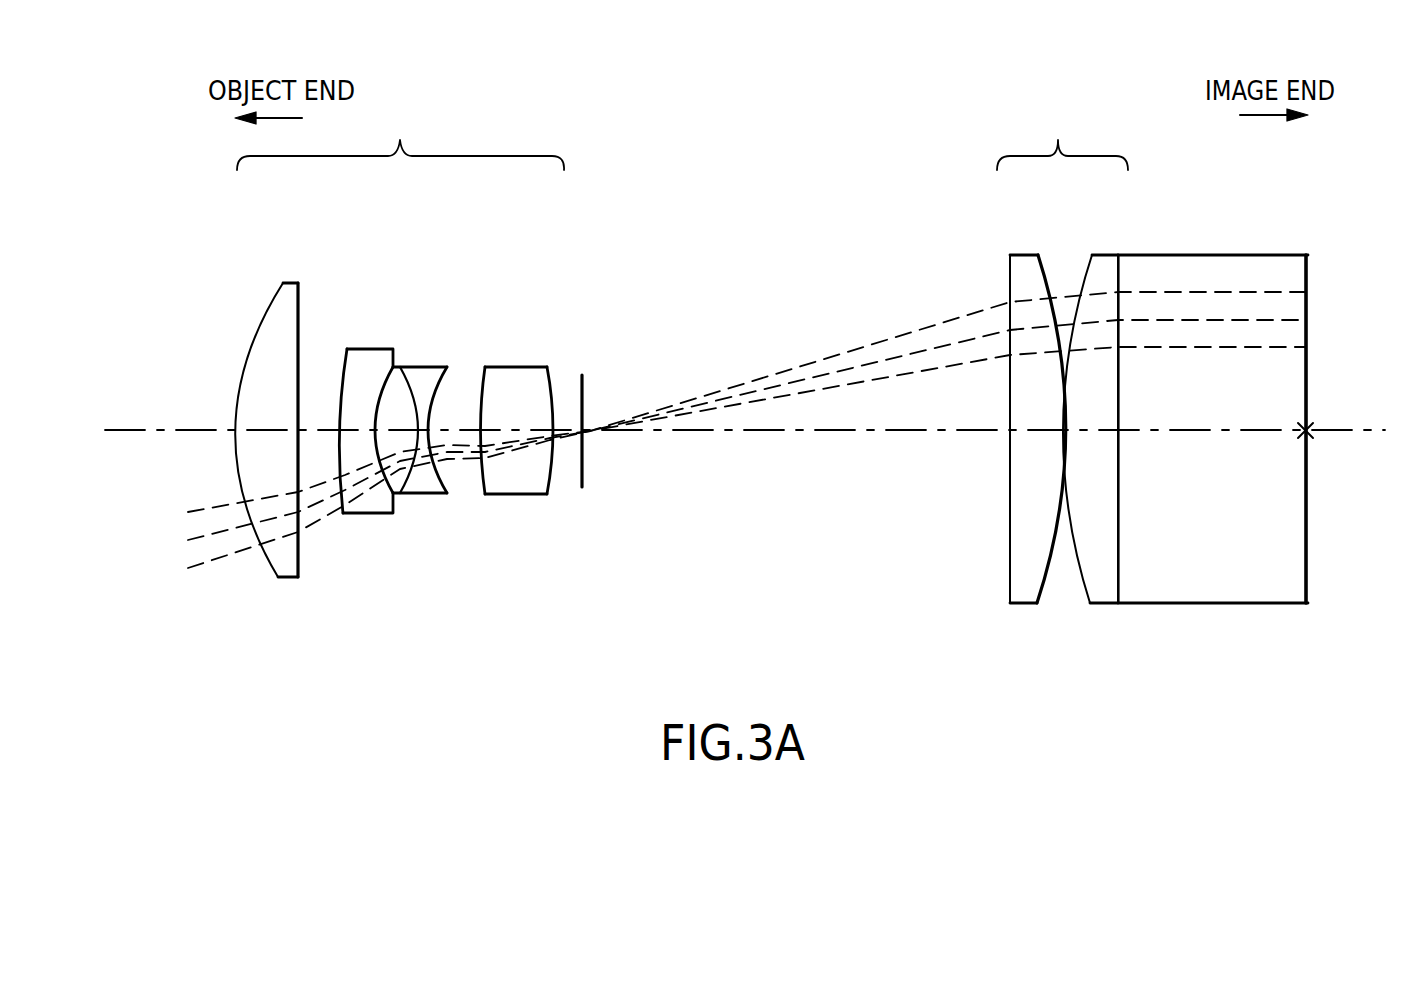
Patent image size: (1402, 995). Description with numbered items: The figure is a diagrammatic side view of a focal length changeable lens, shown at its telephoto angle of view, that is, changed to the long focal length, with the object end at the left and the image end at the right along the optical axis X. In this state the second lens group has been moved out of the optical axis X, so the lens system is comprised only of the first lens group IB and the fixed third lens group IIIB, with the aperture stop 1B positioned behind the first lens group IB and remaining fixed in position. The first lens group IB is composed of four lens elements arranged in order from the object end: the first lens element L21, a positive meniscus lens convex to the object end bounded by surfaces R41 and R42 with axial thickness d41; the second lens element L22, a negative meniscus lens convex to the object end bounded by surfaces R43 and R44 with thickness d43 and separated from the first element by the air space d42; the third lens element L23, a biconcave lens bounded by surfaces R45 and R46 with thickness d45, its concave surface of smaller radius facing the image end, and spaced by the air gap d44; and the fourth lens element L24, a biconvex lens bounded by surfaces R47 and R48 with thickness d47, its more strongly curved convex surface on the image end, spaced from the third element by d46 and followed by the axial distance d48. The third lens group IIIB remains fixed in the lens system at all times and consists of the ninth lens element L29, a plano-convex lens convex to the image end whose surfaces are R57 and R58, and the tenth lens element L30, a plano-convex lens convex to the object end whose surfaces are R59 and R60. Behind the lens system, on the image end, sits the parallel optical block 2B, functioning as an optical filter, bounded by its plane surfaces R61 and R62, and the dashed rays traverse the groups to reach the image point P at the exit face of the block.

The first lens group IB is at (400, 137).
The third lens group IIIB is at (1062, 135).
The first lens element L21 is at (286, 426).
The second lens element L22 is at (351, 429).
The third lens element L23 is at (455, 401).
The fourth lens element L24 is at (547, 400).
The ninth lens element L29 is at (993, 431).
The tenth lens element L30 is at (1126, 453).
The lens surface radius R41 is at (278, 577).
The lens surface radius R42 is at (300, 580).
The lens surface radius R43 is at (343, 514).
The lens surface radius R44 is at (397, 500).
The lens surface radius R45 is at (422, 495).
The lens surface radius R46 is at (452, 496).
The lens surface radius R47 is at (487, 495).
The lens surface radius R48 is at (550, 495).
The lens surface radius R57 is at (1010, 523).
The lens surface radius R58 is at (1045, 603).
The lens surface radius R59 is at (1083, 590).
The lens surface radius R60 is at (1120, 573).
The lens surface radius R61 is at (1118, 520).
The lens surface radius R62 is at (1308, 573).
The axial distance d41 is at (266, 428).
The axial distance d42 is at (345, 434).
The axial distance d43 is at (350, 443).
The axial distance d44 is at (398, 462).
The axial distance d45 is at (408, 440).
The axial distance d46 is at (478, 433).
The axial distance d47 is at (505, 430).
The axial distance d48 is at (560, 433).
The aperture stop 1B is at (592, 472).
The parallel optical block 2B is at (1258, 471).
The image point / image plane P is at (1312, 428).
The optical axis X is at (866, 432).